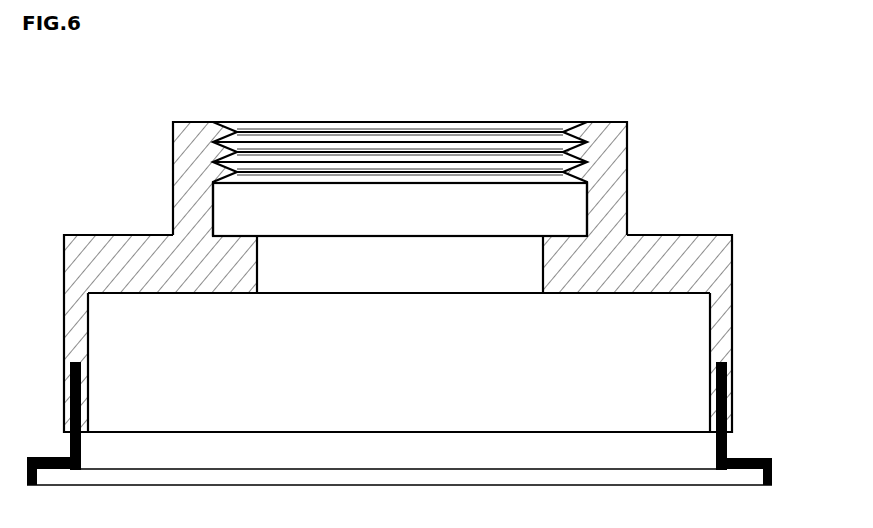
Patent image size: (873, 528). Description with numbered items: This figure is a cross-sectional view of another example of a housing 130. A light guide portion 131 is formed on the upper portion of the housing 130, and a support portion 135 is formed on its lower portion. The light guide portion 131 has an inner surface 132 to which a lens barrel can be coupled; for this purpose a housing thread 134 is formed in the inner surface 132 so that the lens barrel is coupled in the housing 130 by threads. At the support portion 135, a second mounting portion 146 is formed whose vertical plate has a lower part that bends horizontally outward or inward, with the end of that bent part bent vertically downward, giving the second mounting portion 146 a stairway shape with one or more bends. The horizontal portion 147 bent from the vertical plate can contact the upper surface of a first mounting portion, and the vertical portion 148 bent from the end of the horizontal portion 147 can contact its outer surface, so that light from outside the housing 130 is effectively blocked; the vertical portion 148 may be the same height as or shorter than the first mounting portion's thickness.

The housing 130 is at (72, 113).
The light guide portion 131 is at (625, 172).
The inner surface 132 is at (578, 208).
The housing thread 134 is at (535, 145).
The support portion 135 is at (733, 325).
The second mounting portion 146 is at (728, 438).
The horizontal portion 147 is at (738, 458).
The vertical portion 148 is at (773, 467).